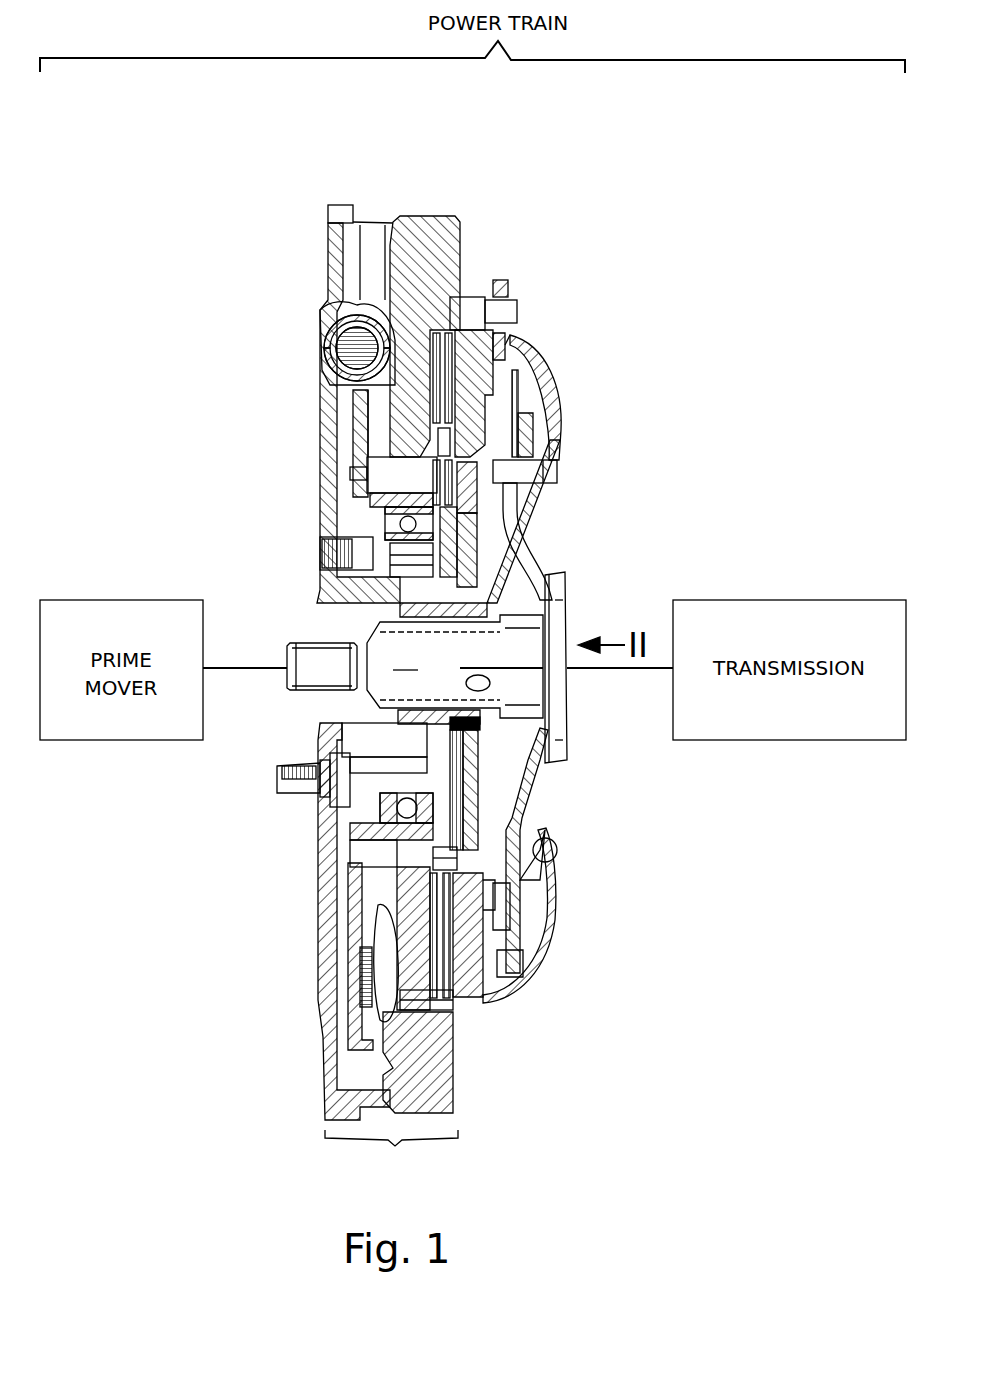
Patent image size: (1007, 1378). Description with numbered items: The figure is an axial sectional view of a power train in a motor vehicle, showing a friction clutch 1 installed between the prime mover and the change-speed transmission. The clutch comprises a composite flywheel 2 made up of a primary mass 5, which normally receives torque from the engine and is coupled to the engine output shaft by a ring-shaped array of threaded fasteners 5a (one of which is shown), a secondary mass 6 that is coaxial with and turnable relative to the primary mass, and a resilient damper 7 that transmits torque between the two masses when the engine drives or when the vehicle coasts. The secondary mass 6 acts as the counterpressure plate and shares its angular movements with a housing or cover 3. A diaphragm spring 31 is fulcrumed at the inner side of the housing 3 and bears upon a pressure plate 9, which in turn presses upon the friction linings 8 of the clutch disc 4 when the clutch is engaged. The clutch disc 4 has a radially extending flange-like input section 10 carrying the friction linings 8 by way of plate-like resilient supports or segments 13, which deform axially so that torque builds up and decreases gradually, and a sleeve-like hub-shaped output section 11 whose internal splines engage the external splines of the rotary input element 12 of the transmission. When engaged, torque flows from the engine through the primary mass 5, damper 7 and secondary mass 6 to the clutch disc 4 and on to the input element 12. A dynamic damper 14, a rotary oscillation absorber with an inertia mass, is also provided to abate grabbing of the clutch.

The friction clutch 1 is at (504, 185).
The composite flywheel 2 is at (391, 1156).
The housing or cover 3 is at (545, 362).
The clutch disc 4 is at (480, 500).
The primary mass 5 is at (334, 1066).
The threaded fasteners 5a is at (287, 794).
The secondary mass 6 is at (445, 1098).
The resilient damper 7 is at (323, 349).
The friction linings 8 is at (478, 1000).
The pressure plate 9 is at (468, 961).
The input section 10 is at (470, 812).
The output section 11 is at (387, 718).
The input element 12 is at (431, 612).
The resilient supports 13 is at (470, 893).
The dynamic damper 14 is at (480, 537).
The diaphragm spring 31 is at (547, 570).